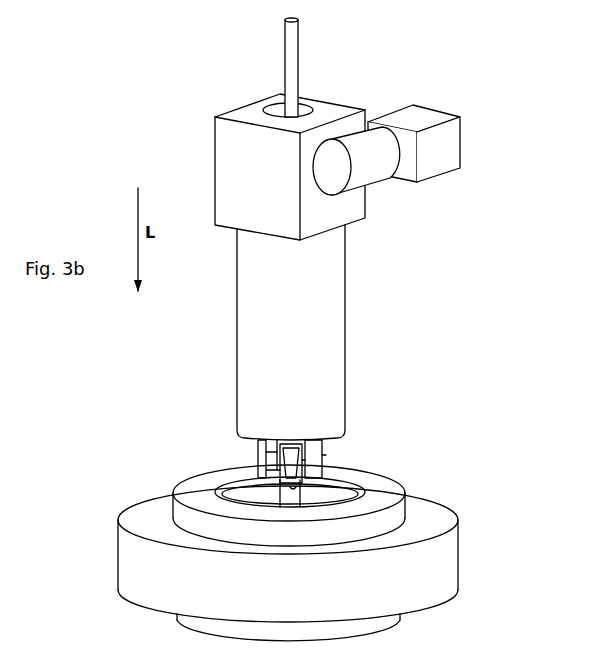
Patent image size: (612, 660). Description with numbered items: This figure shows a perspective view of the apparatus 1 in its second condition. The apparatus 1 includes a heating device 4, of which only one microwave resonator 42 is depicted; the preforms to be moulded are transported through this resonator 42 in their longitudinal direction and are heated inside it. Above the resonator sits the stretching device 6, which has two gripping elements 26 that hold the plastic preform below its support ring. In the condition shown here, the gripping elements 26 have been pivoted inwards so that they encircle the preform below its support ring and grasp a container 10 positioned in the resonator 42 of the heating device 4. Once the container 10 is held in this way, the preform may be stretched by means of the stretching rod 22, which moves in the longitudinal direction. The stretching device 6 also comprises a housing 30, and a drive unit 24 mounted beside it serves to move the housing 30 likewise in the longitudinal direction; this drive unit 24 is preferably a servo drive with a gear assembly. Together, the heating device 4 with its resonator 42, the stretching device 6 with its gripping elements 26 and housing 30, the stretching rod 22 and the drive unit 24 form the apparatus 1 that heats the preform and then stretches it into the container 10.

The apparatus 1 is at (408, 370).
The heating device 4 is at (468, 523).
The stretching device 6 is at (366, 428).
The container 10 is at (215, 494).
The stretching rod 22 is at (287, 80).
The drive unit 24 is at (370, 163).
The gripping elements 26 is at (315, 463).
The housing 30 is at (293, 287).
The microwave resonator 42 is at (375, 572).